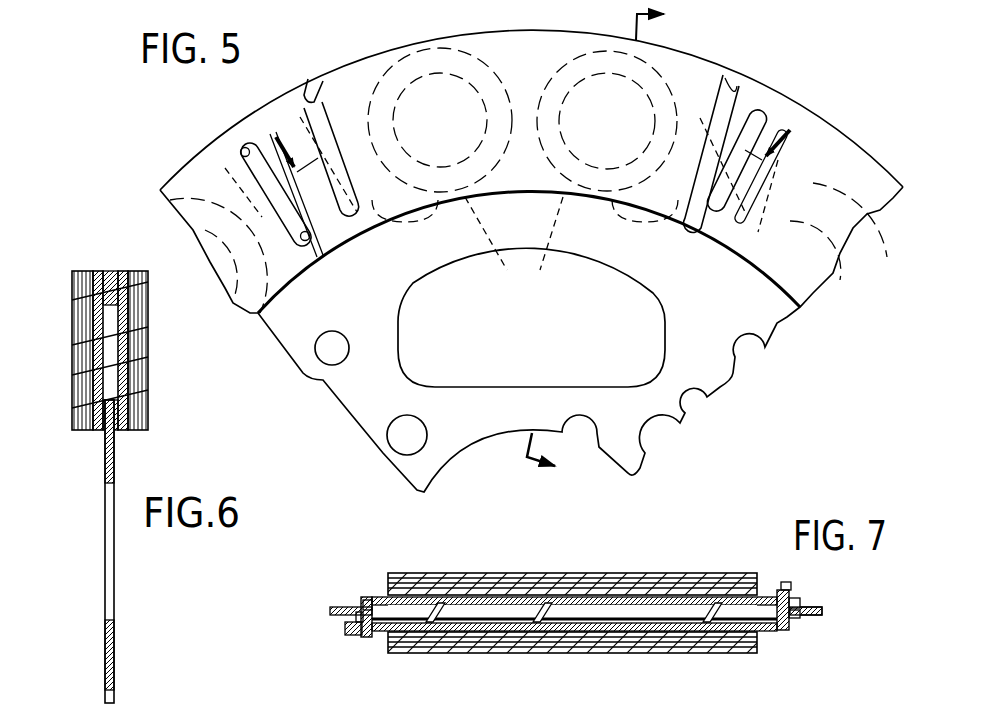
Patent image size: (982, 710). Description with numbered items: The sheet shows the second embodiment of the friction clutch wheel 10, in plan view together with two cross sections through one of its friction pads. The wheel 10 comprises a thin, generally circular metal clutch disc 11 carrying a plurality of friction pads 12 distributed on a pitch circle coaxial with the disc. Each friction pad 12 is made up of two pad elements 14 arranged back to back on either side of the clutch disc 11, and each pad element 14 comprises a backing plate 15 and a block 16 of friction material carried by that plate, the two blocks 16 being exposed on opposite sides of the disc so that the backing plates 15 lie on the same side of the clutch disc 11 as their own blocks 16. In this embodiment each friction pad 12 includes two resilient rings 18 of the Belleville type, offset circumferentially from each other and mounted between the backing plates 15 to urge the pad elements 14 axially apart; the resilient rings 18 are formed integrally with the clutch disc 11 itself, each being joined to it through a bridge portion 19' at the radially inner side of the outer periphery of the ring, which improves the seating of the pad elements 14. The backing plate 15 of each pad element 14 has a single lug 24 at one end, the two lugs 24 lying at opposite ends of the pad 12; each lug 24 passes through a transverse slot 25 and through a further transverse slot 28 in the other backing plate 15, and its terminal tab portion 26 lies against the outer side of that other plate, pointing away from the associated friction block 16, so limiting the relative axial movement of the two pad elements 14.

In FIG. 5, the friction clutch wheel 10 is at (203, 103).
In FIG. 6, the friction clutch wheel 10 is at (96, 505).
In FIG. 7, the friction clutch wheel 10 is at (836, 623).
In FIG. 5, the clutch disc 11 is at (303, 383).
In FIG. 6, the clutch disc 11 is at (115, 628).
In FIG. 7, the clutch disc 11 is at (325, 616).
In FIG. 5, the friction pad 12 is at (327, 70).
In FIG. 6, the friction pad 12 is at (81, 266).
In FIG. 7, the friction pad 12 is at (730, 557).
In FIG. 5, the pad element 14 is at (241, 312).
In FIG. 6, the pad element 14 is at (157, 403).
In FIG. 7, the pad element 14 is at (487, 569).
In FIG. 5, the backing plate 15 is at (260, 133).
In FIG. 6, the backing plate 15 is at (105, 300).
In FIG. 7, the backing plate 15 is at (397, 595).
In FIG. 5, the block of friction material 16 is at (232, 271).
In FIG. 6, the block of friction material 16 is at (110, 300).
In FIG. 7, the block of friction material 16 is at (610, 573).
In FIG. 5, the resilient ring 18 is at (585, 50).
In FIG. 6, the resilient ring 18 is at (130, 290).
In FIG. 7, the resilient ring 18 is at (450, 600).
In FIG. 5, the bridge portion 19' is at (514, 243).
In FIG. 6, the bridge portion 19' is at (145, 459).
In FIG. 5, the lug 24 is at (265, 188).
In FIG. 6, the lug 24 is at (118, 384).
In FIG. 7, the lug 24 is at (366, 598).
In FIG. 5, the transverse slot 25 is at (347, 235).
In FIG. 7, the transverse slot 25 is at (362, 606).
In FIG. 5, the terminal tab portion 26 is at (240, 147).
In FIG. 6, the terminal tab portion 26 is at (150, 390).
In FIG. 7, the terminal tab portion 26 is at (345, 635).
In FIG. 5, the further transverse slot 28 is at (318, 255).
In FIG. 7, the further transverse slot 28 is at (362, 638).